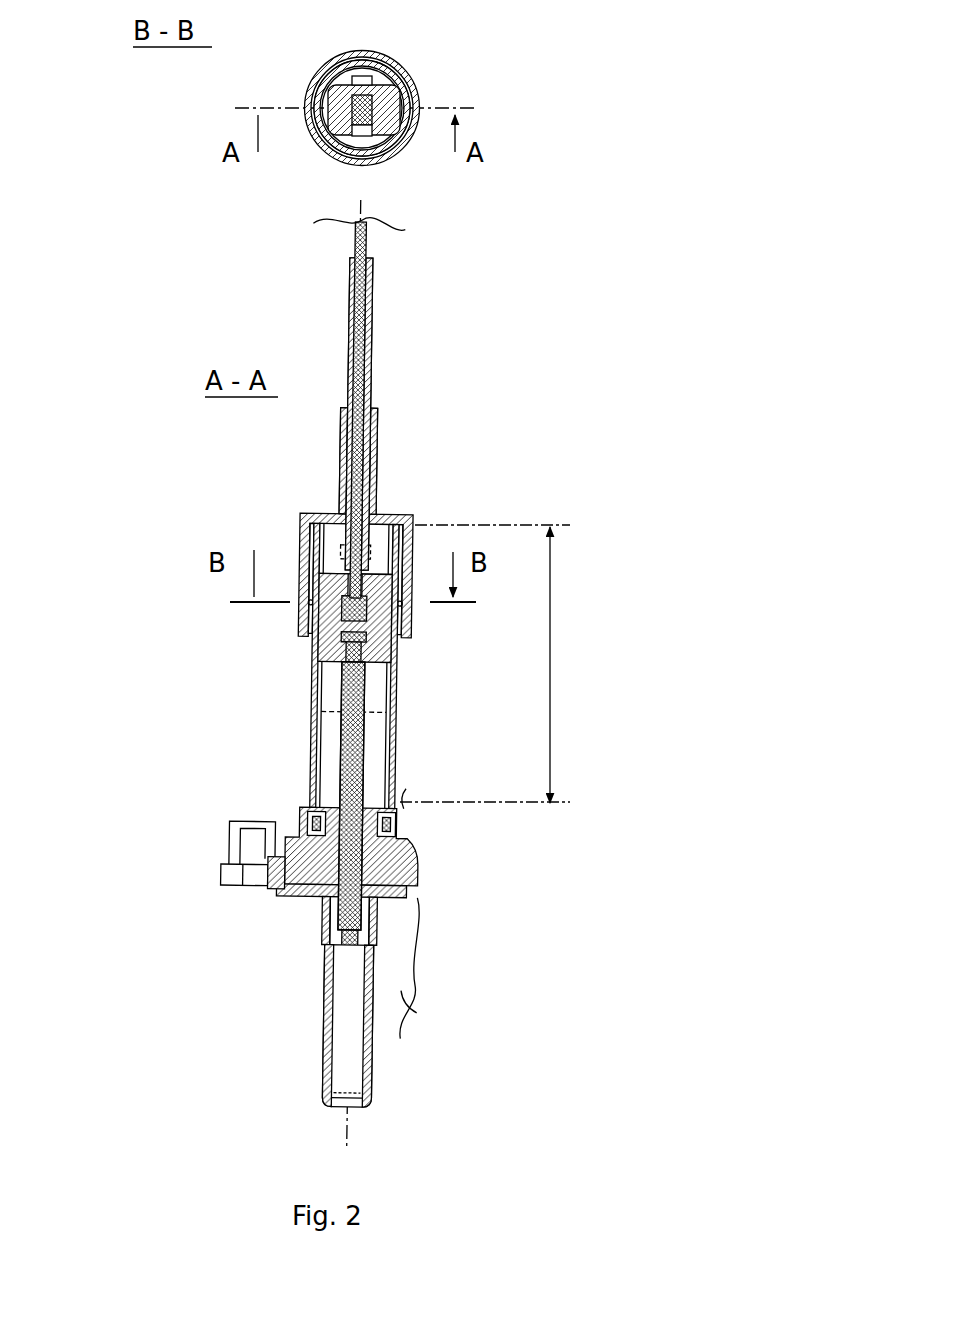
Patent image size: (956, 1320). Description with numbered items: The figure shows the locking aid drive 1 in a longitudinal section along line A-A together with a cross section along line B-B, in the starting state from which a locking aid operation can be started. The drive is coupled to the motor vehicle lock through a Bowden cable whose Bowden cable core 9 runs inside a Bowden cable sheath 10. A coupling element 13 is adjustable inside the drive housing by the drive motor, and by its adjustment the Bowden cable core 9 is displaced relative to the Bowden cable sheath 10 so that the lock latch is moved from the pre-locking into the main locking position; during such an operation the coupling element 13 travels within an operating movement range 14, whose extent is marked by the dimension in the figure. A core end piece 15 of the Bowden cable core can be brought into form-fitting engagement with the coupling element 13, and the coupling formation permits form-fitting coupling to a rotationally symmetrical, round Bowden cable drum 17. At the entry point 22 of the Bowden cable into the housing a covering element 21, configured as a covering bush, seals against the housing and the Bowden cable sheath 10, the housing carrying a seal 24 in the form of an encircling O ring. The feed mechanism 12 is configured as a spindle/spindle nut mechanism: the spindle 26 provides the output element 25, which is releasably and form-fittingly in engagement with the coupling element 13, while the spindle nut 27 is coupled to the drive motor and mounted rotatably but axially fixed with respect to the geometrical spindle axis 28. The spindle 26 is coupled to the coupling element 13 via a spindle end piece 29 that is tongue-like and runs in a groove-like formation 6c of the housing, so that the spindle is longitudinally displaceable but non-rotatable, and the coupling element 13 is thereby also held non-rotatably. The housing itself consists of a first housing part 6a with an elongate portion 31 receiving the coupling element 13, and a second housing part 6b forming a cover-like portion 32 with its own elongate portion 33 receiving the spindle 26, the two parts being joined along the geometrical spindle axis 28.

The locking aid drive 1 is at (614, 351).
The housing part 6a is at (415, 92).
The second housing part 6b is at (322, 970).
The groove-like formation 6c is at (356, 70).
The Bowden cable core 9 is at (370, 233).
The Bowden cable sheath 10 is at (371, 357).
The feed mechanism 12 is at (419, 785).
The coupling element 13 is at (331, 148).
The operating movement range 14 is at (552, 673).
The core end piece 15 is at (386, 581).
The Bowden cable drum 17 is at (400, 143).
The covering element 21 is at (420, 97).
The entry point 22 is at (385, 496).
The seal 24 is at (402, 76).
The output element 25 is at (333, 770).
The spindle 26 is at (333, 770).
The spindle nut 27 is at (400, 856).
The geometrical spindle axis 28 is at (345, 1132).
The spindle end piece 29 is at (312, 633).
The elongate portion 31 is at (311, 730).
The cover-like portion 32 is at (420, 898).
The elongate portion 33 is at (373, 1067).